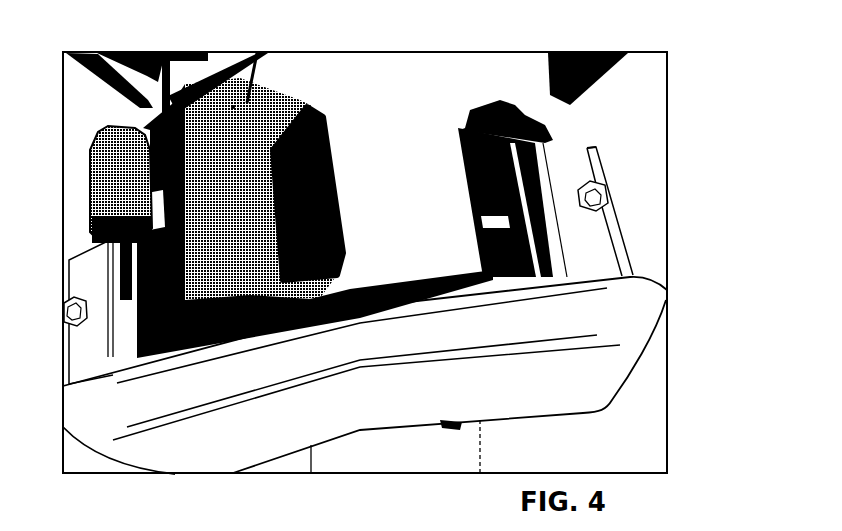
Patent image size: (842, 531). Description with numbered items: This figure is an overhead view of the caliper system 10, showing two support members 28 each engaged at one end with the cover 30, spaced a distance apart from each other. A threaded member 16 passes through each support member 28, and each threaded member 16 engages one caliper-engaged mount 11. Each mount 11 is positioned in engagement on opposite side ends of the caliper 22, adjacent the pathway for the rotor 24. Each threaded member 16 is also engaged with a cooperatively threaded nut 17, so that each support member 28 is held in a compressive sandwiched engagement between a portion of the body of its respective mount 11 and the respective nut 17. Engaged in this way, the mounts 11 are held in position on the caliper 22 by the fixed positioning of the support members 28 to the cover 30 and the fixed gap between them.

The caliper system 10 is at (680, 183).
The caliper-engaged mount 11 is at (93, 350).
The threaded member 16 is at (63, 320).
The nut 17 is at (73, 327).
The caliper 22 is at (430, 85).
The rotor 24 is at (497, 222).
The support member 28 is at (90, 260).
The cover 30 is at (640, 310).